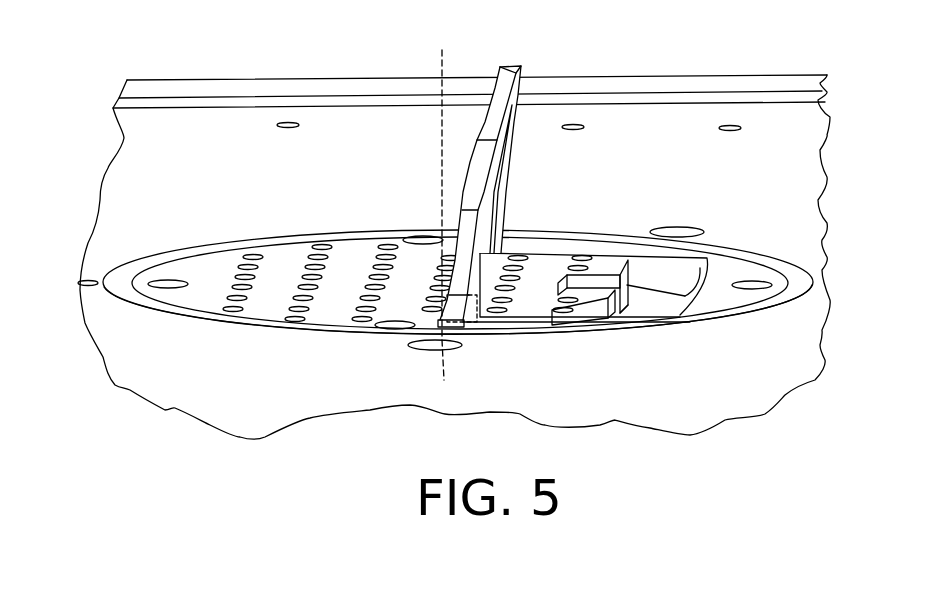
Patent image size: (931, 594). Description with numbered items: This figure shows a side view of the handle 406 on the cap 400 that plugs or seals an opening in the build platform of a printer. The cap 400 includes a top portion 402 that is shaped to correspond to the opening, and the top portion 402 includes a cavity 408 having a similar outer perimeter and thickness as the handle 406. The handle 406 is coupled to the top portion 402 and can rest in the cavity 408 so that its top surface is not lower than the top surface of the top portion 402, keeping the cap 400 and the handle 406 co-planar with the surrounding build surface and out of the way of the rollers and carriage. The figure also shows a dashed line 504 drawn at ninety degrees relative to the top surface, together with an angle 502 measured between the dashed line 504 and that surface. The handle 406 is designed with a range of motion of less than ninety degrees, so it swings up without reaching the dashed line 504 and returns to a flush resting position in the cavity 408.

The cap 400 is at (748, 272).
The top portion 402 is at (152, 272).
The handle 406 is at (511, 66).
The cavity 408 is at (645, 297).
The angle 502 is at (444, 380).
The dashed line 504 is at (438, 63).